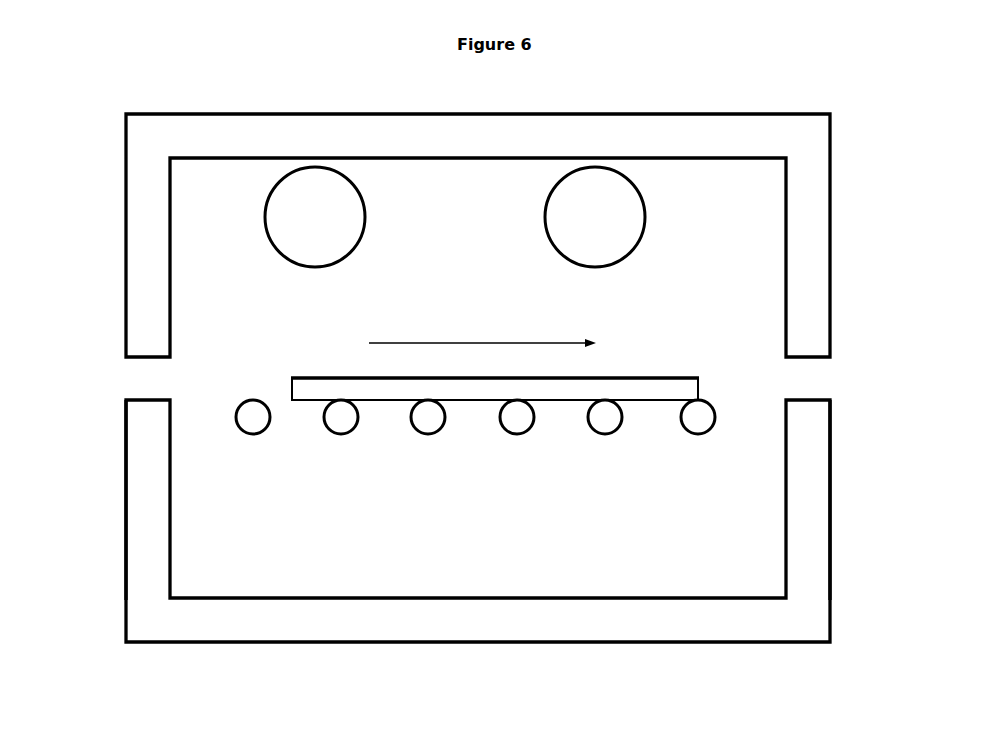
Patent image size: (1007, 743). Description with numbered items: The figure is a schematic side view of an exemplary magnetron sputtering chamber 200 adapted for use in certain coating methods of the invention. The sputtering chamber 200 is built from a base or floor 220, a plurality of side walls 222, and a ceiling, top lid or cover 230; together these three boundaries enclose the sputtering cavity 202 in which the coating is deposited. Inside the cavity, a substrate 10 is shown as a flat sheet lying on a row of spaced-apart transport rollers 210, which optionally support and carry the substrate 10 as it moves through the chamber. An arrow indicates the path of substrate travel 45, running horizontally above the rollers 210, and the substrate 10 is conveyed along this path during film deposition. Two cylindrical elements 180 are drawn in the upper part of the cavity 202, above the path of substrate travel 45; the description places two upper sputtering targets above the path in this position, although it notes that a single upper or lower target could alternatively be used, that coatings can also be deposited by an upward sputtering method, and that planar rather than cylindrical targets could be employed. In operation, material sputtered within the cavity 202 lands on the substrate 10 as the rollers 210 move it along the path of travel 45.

The magnetron sputtering chamber 200 is at (499, 351).
The ceiling 230 is at (262, 131).
The base 220 is at (481, 619).
The side walls 222 is at (145, 482).
The sputtering cavity 202 is at (217, 220).
The lamps / heating elements 180 is at (333, 198).
The path of substrate travel 45 is at (482, 330).
The substrate 10 is at (648, 384).
The transport rollers 210 is at (252, 415).